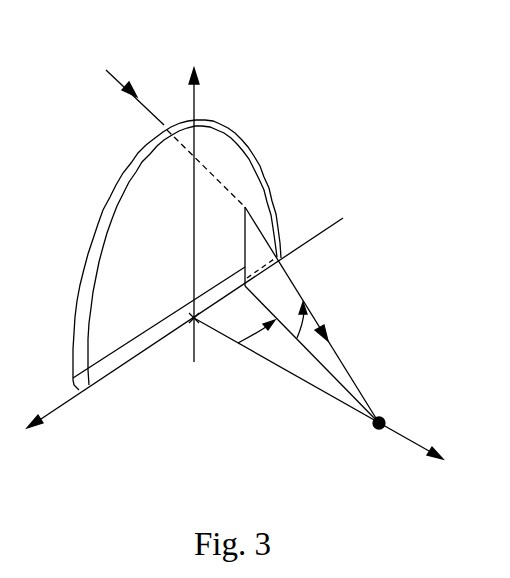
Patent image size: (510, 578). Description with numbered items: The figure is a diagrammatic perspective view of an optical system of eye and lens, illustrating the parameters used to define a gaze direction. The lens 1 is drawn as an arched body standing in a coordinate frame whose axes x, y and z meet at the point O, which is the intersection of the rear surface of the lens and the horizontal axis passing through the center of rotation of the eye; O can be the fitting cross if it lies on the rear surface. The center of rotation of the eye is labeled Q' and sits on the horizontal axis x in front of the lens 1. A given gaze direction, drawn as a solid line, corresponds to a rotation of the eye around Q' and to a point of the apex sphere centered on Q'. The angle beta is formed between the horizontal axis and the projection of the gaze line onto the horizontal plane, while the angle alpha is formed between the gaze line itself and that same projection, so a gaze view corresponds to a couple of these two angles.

The arched light guide body 1 is at (88, 254).
The point O is at (186, 334).
The center of rotation of the eye Q' is at (394, 414).
The x-axis x is at (324, 388).
The y-axis y is at (199, 208).
The z-axis z is at (185, 334).